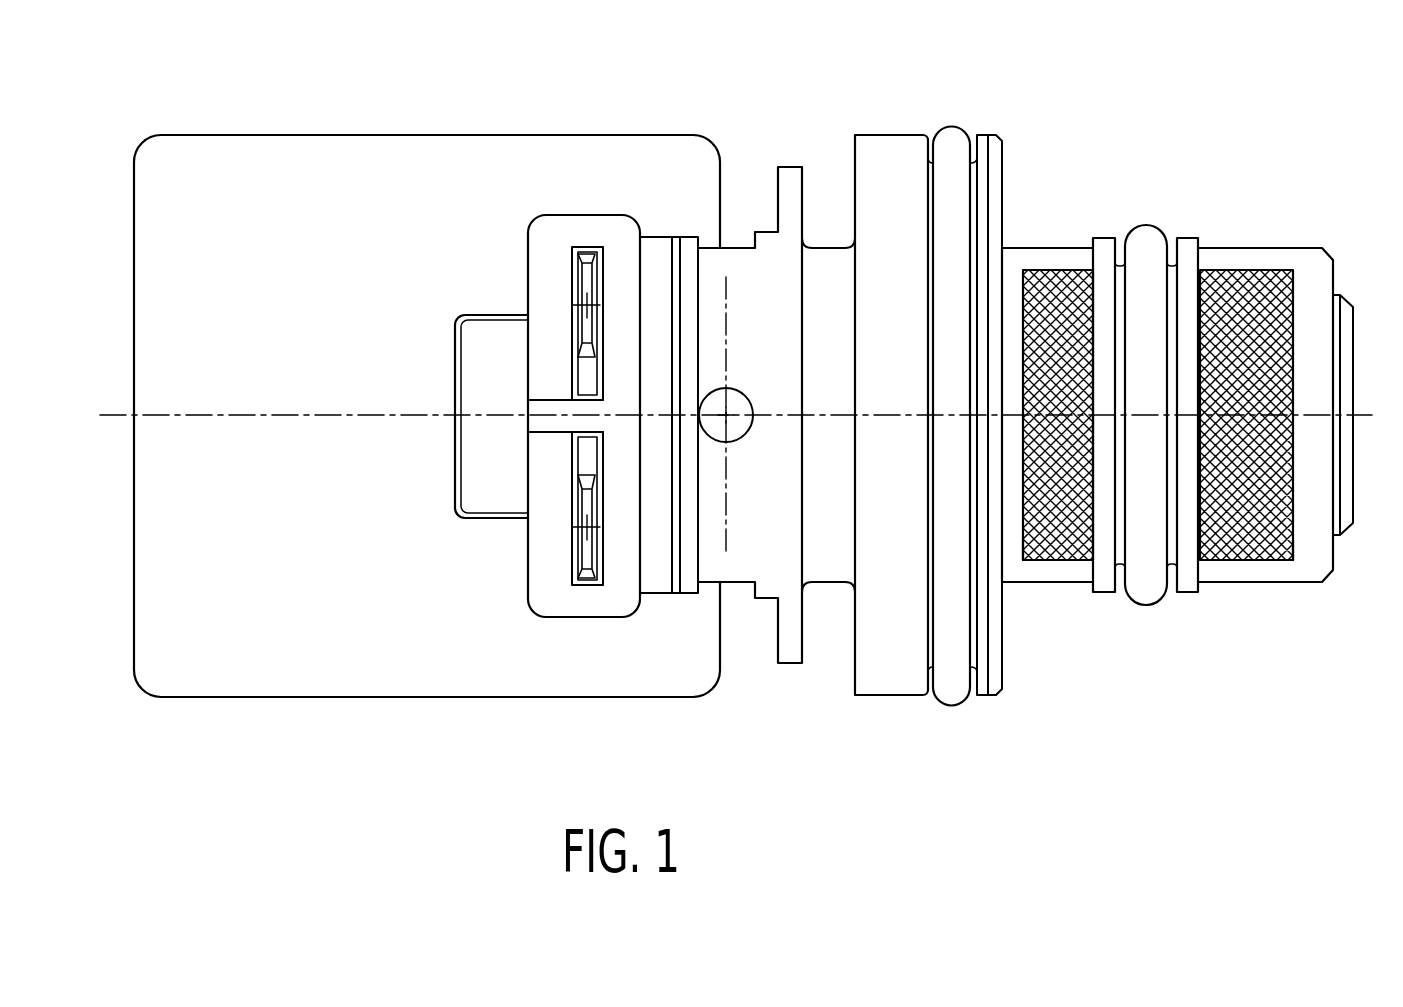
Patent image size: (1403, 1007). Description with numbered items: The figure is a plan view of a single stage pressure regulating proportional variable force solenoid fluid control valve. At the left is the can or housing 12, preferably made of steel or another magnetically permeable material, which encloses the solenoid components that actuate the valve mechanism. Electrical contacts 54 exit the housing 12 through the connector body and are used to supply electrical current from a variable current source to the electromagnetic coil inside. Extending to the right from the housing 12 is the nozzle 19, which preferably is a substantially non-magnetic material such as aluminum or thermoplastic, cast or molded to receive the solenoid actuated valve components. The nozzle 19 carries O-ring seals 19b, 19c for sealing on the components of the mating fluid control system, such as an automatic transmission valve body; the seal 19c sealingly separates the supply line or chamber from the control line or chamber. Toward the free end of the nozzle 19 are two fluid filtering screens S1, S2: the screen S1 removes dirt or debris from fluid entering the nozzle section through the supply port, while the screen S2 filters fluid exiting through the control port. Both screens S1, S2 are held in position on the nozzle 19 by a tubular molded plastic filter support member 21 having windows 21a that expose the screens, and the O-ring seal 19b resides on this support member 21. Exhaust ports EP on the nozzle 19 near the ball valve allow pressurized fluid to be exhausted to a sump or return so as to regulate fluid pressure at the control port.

The can or housing 12 is at (338, 182).
The electrical contacts 54 is at (585, 293).
The nozzle 19 is at (879, 132).
The O-ring seal 19b is at (1145, 238).
The O-ring seal 19c is at (952, 140).
The fluid filtering screen S1 is at (1253, 287).
The fluid filtering screen S2 is at (1048, 285).
The filter support member 21 is at (1220, 585).
The windows 21a is at (1048, 562).
The exhaust ports EP is at (733, 445).